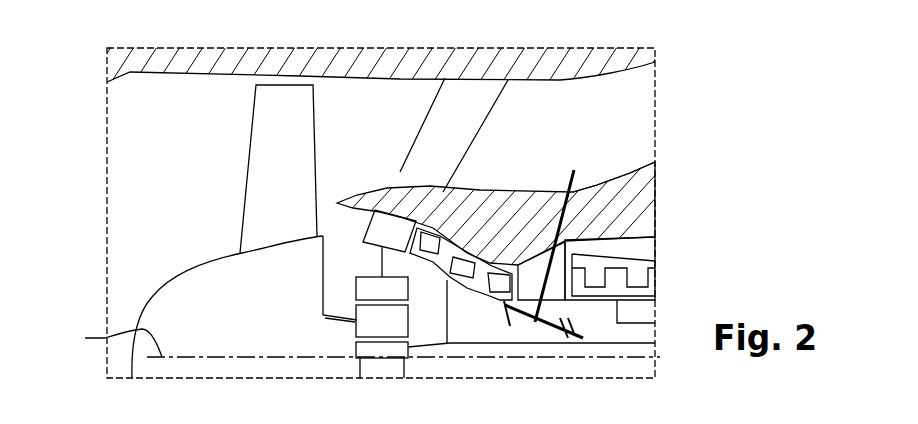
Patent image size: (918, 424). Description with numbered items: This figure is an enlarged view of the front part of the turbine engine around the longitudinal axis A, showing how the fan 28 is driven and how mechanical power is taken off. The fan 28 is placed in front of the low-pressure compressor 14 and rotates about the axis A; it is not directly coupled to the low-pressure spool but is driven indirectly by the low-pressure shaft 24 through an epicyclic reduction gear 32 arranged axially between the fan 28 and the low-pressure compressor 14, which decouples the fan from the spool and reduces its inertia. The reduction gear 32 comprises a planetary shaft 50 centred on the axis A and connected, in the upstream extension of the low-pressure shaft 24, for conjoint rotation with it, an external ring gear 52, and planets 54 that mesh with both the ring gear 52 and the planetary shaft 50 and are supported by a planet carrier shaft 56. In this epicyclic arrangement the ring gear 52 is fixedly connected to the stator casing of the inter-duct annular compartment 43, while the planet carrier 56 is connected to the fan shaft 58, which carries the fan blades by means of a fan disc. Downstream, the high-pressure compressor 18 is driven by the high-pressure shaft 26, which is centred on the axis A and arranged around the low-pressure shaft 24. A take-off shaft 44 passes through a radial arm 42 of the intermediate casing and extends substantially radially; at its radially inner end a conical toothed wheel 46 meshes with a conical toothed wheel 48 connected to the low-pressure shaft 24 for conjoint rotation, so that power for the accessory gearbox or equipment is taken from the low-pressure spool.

The fan 28 is at (222, 131).
The fan shaft 58 is at (325, 298).
The planet carrier shaft 56 is at (327, 320).
The external ring gear 52 is at (370, 287).
The planets 54 is at (402, 318).
The planetary shaft 50 is at (385, 350).
The epicyclic reduction gear 32 is at (340, 344).
The longitudinal axis A is at (113, 339).
The inter-duct annular compartment 43 is at (482, 210).
The take-off shaft 44 is at (575, 192).
The radial arm 42 is at (532, 277).
The high-pressure compressor 18 is at (620, 277).
The high-pressure shaft 26 is at (640, 323).
The low-pressure compressor 14 is at (463, 293).
The low-pressure shaft 24 is at (538, 343).
The toothed wheel 46 is at (523, 313).
The toothed wheel 48 is at (573, 333).